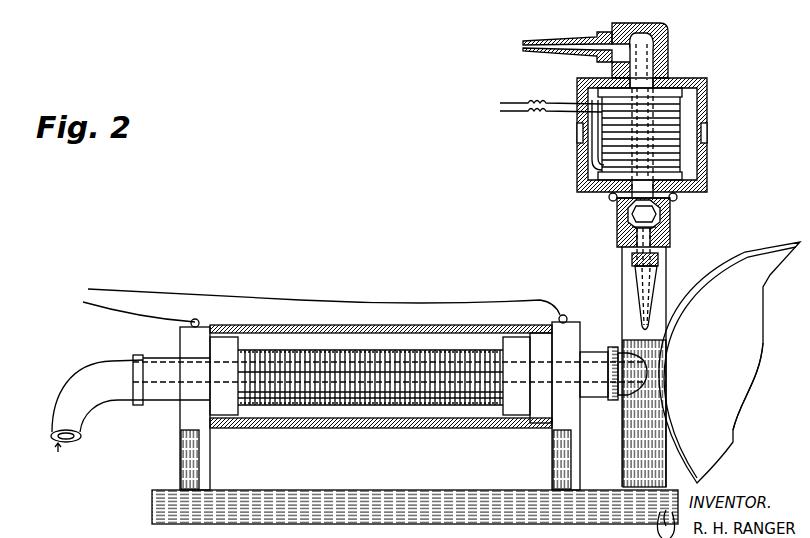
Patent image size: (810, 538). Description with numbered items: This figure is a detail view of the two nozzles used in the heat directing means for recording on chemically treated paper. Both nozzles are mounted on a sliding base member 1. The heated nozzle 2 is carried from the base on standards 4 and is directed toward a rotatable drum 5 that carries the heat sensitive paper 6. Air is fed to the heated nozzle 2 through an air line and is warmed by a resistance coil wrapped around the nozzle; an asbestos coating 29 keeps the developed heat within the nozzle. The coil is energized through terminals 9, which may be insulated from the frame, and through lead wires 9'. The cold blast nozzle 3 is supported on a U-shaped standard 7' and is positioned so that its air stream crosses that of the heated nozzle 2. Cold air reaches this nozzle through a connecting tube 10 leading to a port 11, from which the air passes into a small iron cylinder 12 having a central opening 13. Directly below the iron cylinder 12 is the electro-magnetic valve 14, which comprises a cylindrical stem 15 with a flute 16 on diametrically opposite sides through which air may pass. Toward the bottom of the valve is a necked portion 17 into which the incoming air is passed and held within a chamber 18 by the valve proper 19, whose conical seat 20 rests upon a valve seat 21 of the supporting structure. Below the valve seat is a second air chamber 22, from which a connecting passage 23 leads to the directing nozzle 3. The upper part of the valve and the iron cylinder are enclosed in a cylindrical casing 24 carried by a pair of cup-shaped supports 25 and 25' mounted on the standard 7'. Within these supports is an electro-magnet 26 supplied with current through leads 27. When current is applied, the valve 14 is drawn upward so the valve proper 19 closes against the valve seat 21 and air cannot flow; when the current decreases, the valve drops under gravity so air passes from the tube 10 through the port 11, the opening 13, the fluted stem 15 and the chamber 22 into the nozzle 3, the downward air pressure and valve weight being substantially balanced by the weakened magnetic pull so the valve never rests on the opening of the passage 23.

The sliding base member 1 is at (418, 412).
The heated nozzle 2 is at (611, 403).
The cold blast nozzle 3 is at (650, 292).
The standards 4 is at (181, 456).
The drum 5 is at (742, 400).
The heat sensitive paper 6 is at (791, 244).
The U-shaped standard 7' is at (632, 367).
The terminals 9 is at (383, 313).
The lead wires 9' is at (315, 303).
The connecting tube 10 is at (548, 38).
The port 11 is at (641, 38).
The iron cylinder 12 is at (650, 62).
The central opening 13 is at (646, 88).
The electro-magnetic valve 14 is at (609, 255).
The cylindrical stem 15 is at (652, 162).
The flute 16 is at (652, 138).
The necked portion 17 is at (678, 200).
The chamber 18 is at (658, 207).
The valve proper 19 is at (662, 218).
The conical seat 20 is at (640, 212).
The valve seat 21 is at (609, 202).
The second air chamber 22 is at (624, 227).
The connecting passage 23 is at (660, 259).
The cylindrical casing 24 is at (668, 95).
The U-shaped support 25 is at (659, 112).
The U-shaped support 25' is at (724, 144).
The electro-magnet 26 is at (610, 150).
The leads 27 is at (541, 109).
The asbestos coating 29 is at (355, 326).